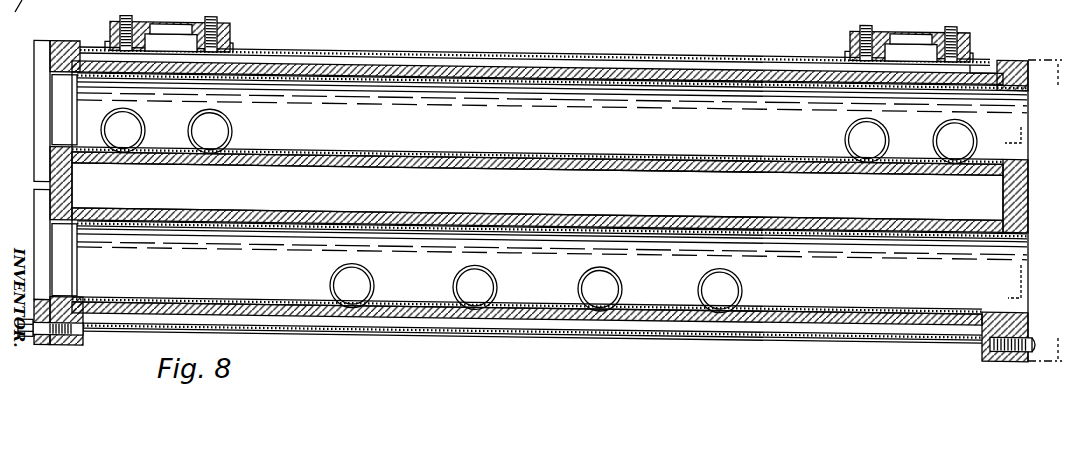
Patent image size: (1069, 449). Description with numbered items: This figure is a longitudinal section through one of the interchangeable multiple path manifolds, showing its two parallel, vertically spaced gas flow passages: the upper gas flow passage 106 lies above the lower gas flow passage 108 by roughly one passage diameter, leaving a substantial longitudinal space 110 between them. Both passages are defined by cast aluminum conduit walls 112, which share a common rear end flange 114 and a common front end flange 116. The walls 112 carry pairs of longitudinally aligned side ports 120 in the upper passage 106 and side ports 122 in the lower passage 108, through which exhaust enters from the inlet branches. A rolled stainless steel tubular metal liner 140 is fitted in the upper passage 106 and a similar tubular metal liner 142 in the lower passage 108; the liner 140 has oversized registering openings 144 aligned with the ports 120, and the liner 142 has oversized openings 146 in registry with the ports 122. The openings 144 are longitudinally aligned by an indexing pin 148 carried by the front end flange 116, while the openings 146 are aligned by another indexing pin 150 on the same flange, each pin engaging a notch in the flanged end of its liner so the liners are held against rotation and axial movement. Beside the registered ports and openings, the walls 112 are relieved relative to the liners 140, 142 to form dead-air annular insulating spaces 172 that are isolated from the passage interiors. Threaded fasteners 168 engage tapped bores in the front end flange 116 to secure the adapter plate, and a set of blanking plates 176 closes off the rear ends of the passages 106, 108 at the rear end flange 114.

The upper gas flow passage 106 is at (410, 86).
The lower gas flow passage 108 is at (437, 298).
The longitudinal space 110 is at (376, 181).
The conduit walls 112 is at (585, 170).
The rear end flange 114 is at (62, 49).
The front end flange 116 is at (1027, 53).
The side openings or ports 120 is at (229, 125).
The side openings or ports 122 is at (370, 271).
The tubular metal liner 140 is at (668, 84).
The tubular metal liner 142 is at (862, 233).
The registering openings 144 is at (139, 115).
The openings 146 is at (347, 266).
The indexing pin 148 is at (1022, 128).
The indexing pin 150 is at (1022, 267).
The threaded fasteners 168 is at (1000, 347).
The annular insulating spaces 172 is at (574, 78).
The blanking plates 176 is at (39, 85).